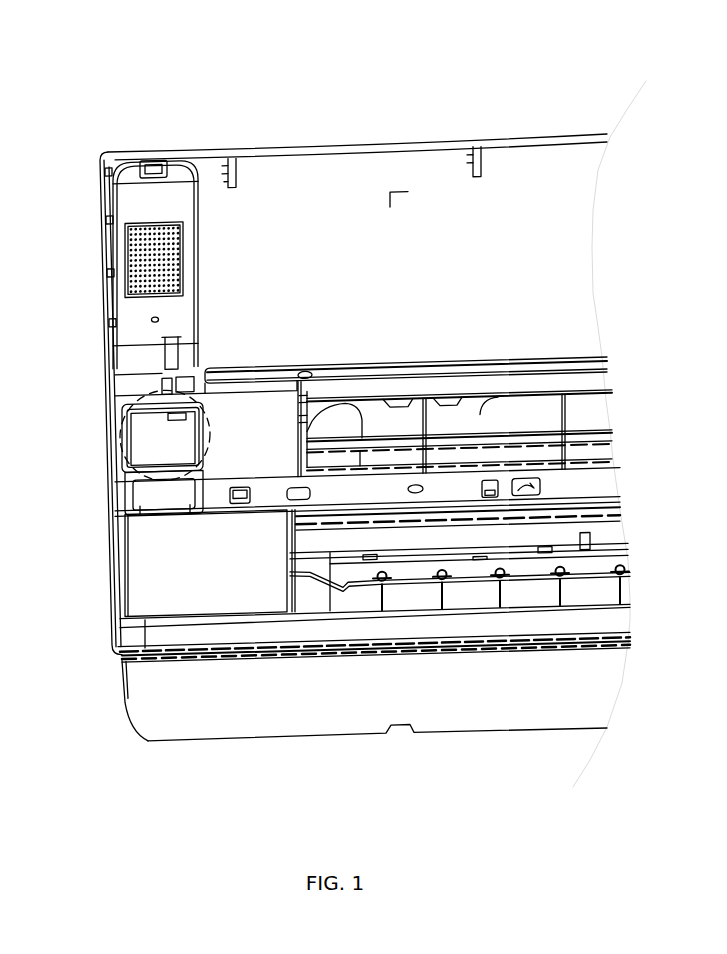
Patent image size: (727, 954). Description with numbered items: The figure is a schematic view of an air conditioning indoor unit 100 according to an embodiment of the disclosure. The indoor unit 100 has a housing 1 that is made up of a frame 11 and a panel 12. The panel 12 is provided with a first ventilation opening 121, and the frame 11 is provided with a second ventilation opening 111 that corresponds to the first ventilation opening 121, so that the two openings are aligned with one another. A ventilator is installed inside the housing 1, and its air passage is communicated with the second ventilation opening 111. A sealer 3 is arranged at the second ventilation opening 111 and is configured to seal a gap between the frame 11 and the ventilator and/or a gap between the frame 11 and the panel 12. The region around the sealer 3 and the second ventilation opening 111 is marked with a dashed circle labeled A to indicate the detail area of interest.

The air conditioning indoor unit 100 is at (427, 41).
The housing 1 is at (335, 747).
The frame 11 is at (140, 558).
The panel 12 is at (334, 170).
The second ventilation opening 111 is at (150, 456).
The first ventilation opening 121 is at (133, 261).
The sealer 3 is at (130, 441).
The detail region A is at (115, 425).